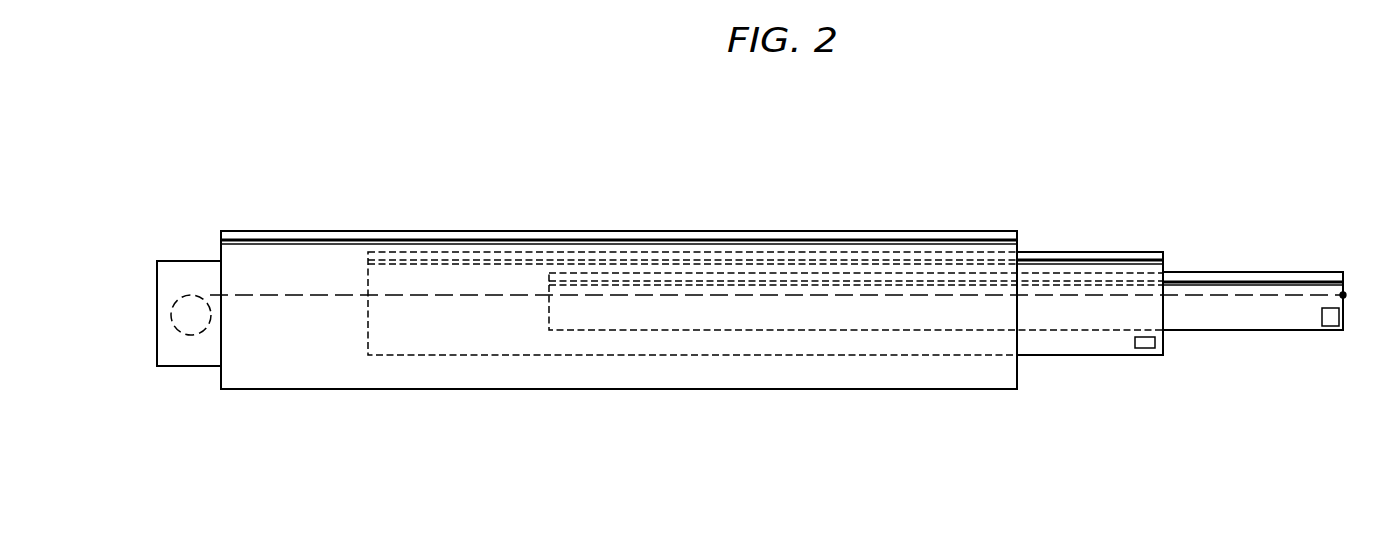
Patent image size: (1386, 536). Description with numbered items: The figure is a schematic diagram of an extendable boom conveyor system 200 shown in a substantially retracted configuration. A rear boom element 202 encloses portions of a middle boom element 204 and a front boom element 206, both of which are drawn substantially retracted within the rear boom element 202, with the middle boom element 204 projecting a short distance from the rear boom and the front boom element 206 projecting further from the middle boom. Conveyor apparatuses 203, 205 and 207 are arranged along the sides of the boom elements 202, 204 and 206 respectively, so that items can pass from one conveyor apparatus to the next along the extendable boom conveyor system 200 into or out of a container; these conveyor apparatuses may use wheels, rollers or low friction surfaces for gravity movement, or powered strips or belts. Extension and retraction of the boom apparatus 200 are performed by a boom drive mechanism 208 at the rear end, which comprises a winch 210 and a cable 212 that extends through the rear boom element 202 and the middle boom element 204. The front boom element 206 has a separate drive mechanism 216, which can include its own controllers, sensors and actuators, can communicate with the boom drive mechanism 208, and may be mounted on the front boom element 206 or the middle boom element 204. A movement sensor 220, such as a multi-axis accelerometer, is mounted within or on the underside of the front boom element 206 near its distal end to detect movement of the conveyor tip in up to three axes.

The extendable boom conveyor system 200 is at (757, 157).
The rear boom element 202 is at (965, 390).
The conveyor apparatus 203 is at (938, 230).
The middle boom element 204 is at (1073, 357).
The conveyor apparatus 205 is at (1080, 250).
The front boom element 206 is at (1253, 332).
The conveyor apparatus 207 is at (1268, 271).
The boom drive mechanism 208 is at (191, 343).
The winch 210 is at (187, 260).
The cable 212 is at (293, 283).
The drive mechanism 216 is at (1145, 349).
The movement sensor 220 is at (1326, 328).